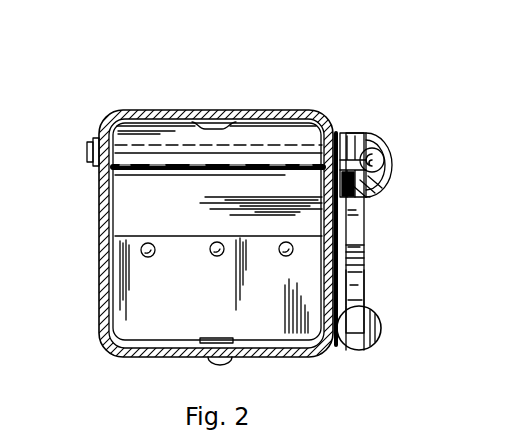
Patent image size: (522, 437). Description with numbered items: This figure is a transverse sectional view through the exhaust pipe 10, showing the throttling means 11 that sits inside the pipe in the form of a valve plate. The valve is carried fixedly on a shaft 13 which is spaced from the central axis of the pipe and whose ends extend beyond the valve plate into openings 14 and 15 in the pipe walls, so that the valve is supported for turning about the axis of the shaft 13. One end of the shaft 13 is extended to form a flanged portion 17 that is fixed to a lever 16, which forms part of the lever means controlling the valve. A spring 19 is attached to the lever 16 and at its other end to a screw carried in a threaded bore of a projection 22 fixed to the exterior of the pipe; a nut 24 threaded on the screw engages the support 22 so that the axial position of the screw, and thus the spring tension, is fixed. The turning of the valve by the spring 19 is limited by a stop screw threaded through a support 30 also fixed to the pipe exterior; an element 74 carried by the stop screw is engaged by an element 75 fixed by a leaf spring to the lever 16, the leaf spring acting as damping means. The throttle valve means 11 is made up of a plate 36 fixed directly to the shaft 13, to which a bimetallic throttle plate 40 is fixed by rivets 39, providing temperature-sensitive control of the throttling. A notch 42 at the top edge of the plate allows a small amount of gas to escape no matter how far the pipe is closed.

The exhaust pipe 10 is at (280, 98).
The throttling means 11 is at (134, 221).
The shaft 13 is at (179, 150).
The opening 14 is at (94, 109).
The opening 15 is at (343, 132).
The lever 16 is at (379, 190).
The flanged portion 17 is at (383, 132).
The spring 19 is at (396, 160).
The projection 22 is at (386, 143).
The nut 24 is at (387, 171).
The support 30 is at (337, 348).
The plate 36 is at (137, 197).
The rivets 39 is at (140, 251).
The bimetallic throttle plate 40 is at (137, 297).
The notch 42 is at (217, 118).
The element 74 is at (377, 321).
The element 75 is at (357, 285).